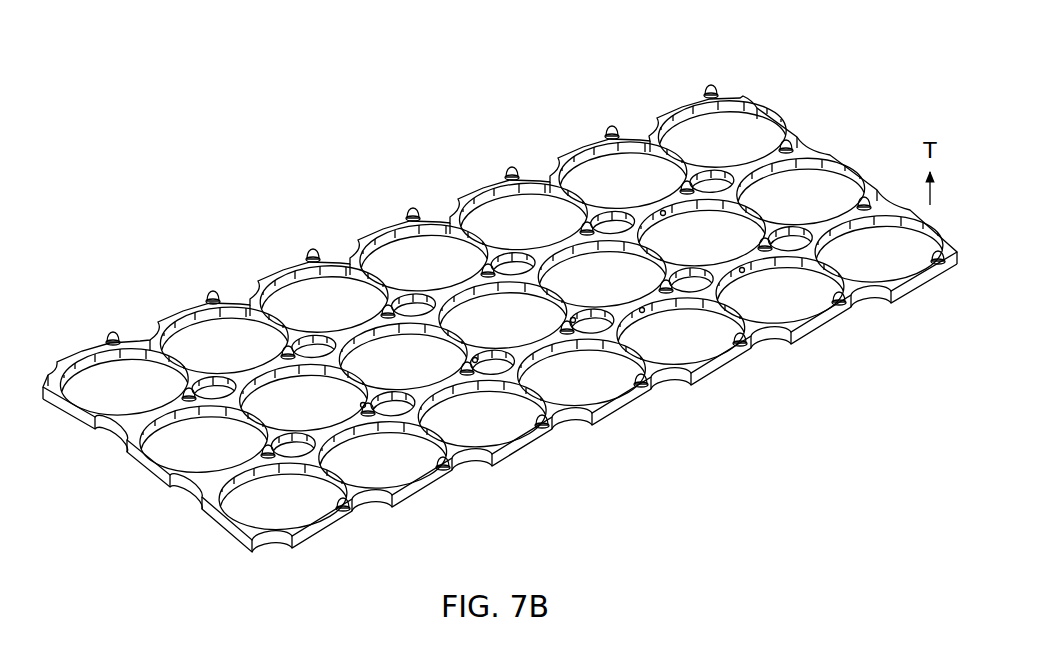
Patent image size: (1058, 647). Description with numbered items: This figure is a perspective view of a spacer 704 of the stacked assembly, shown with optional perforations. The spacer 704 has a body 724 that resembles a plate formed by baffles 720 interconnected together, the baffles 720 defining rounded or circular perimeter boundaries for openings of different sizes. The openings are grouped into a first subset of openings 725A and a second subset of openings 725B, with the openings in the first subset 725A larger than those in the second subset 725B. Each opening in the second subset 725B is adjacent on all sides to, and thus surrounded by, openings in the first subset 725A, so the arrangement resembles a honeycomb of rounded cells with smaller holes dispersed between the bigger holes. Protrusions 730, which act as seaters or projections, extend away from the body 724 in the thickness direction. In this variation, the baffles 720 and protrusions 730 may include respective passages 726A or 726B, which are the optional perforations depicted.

The spacer 704 is at (500, 286).
The baffles 720 is at (92, 362).
The body 724 is at (131, 491).
The first subset of openings 725A is at (202, 340).
The second subset of openings 725B is at (611, 215).
The passages 726A is at (643, 312).
The passages 726B is at (477, 363).
The protrusions 730 is at (312, 260).